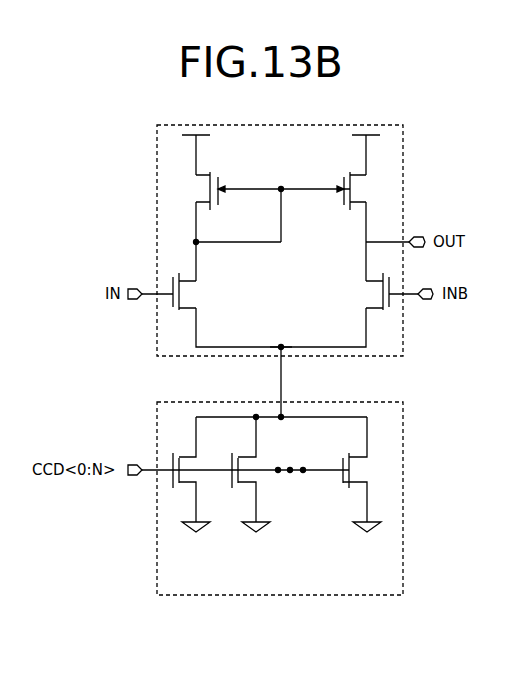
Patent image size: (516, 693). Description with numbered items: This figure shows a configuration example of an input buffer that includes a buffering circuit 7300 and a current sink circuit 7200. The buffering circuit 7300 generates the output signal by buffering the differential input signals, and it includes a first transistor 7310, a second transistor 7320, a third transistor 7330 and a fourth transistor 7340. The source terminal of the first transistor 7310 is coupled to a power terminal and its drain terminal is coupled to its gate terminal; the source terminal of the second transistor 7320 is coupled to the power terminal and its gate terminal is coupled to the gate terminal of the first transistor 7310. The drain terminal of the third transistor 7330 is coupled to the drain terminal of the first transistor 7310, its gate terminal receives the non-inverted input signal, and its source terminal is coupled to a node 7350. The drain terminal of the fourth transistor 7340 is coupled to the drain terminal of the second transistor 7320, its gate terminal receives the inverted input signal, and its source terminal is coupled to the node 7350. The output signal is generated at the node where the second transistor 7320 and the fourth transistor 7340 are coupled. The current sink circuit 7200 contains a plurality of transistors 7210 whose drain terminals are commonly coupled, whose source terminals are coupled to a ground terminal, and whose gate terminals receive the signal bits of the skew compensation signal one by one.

The buffering circuit 7300 is at (369, 125).
The current sink circuit 7200 is at (369, 402).
The first transistor 7310 is at (210, 170).
The second transistor 7320 is at (350, 170).
The third transistor 7330 is at (186, 295).
The fourth transistor 7340 is at (372, 293).
The node 7350 is at (281, 345).
The transistors 7210 is at (192, 474).